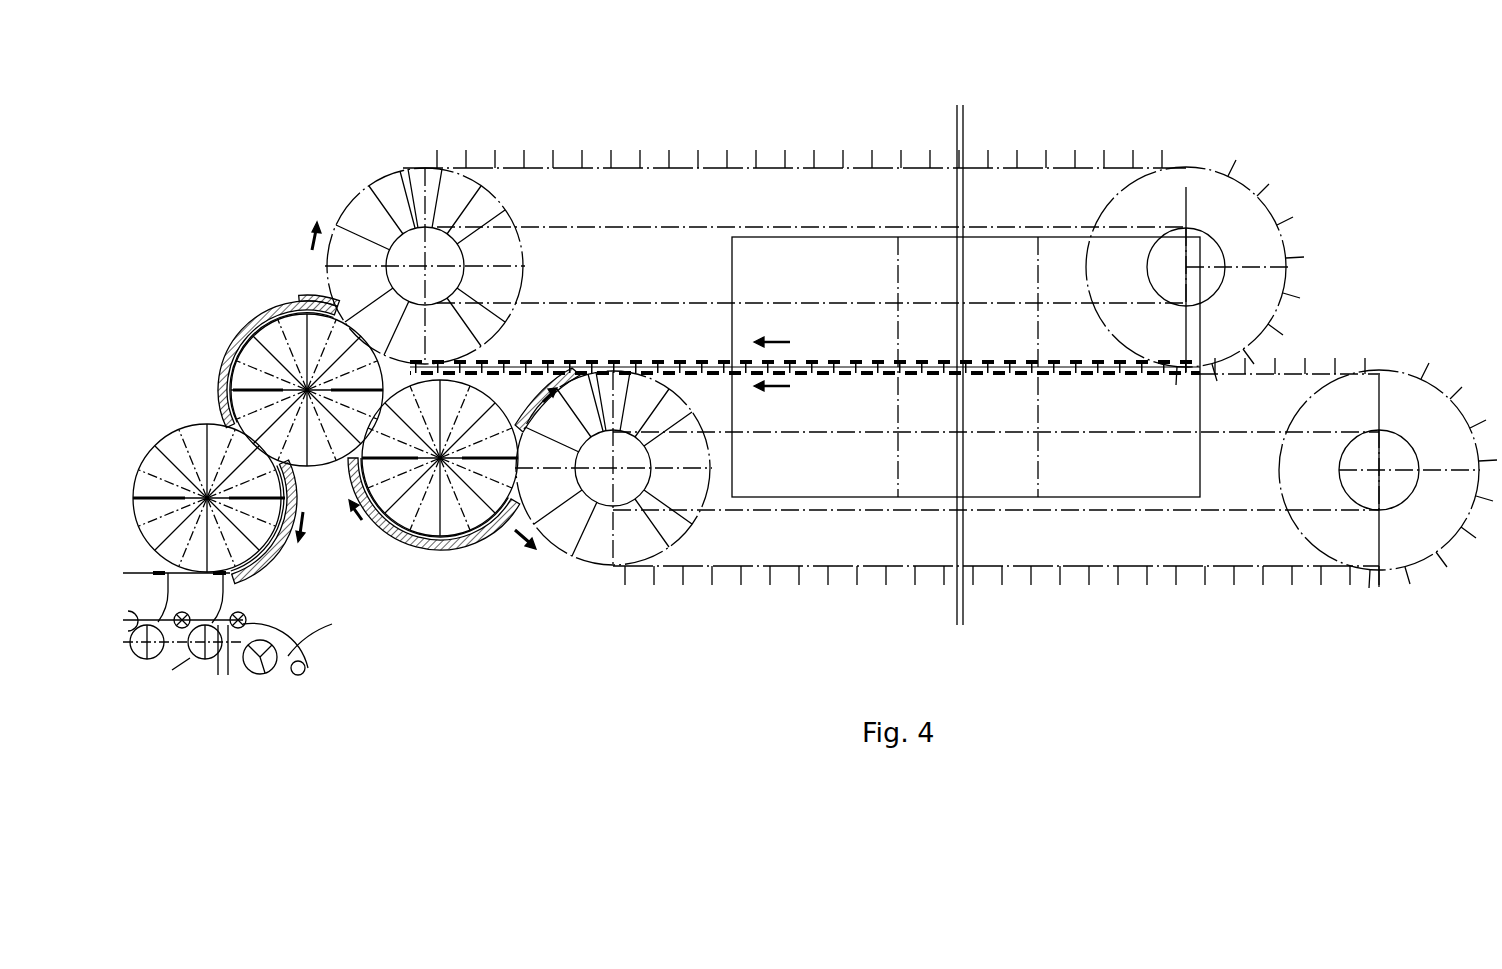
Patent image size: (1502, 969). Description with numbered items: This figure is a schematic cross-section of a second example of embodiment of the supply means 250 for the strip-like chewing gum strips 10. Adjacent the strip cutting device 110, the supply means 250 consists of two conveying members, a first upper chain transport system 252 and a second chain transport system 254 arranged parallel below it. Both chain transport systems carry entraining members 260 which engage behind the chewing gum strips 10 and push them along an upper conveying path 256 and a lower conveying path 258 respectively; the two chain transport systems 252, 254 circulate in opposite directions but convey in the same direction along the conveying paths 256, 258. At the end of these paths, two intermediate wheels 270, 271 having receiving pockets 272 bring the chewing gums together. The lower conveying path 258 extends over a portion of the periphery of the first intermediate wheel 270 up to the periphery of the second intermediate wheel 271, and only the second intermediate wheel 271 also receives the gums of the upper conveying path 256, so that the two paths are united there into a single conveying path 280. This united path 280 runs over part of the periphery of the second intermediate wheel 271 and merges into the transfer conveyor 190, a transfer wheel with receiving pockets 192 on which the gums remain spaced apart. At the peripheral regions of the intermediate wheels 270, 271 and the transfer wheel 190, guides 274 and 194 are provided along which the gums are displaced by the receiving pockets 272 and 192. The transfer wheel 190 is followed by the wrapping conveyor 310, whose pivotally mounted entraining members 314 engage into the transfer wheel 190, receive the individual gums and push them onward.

The chewing gum strips 10 is at (828, 360).
The strip cutting device 110 is at (830, 263).
The transfer conveyor 190 is at (182, 445).
The receiving pockets 192 is at (263, 563).
The guide 194 is at (280, 553).
The supply means 250 is at (1115, 141).
The first upper chain transport system 252 is at (622, 167).
The second chain transport system 254 is at (757, 575).
The upper conveying path 256 is at (527, 360).
The lower conveying path 258 is at (837, 377).
The entraining members 260 is at (553, 153).
The first intermediate wheel 270 is at (470, 550).
The second intermediate wheel 271 is at (250, 373).
The receiving pockets 272 is at (257, 323).
The guides 274 is at (220, 383).
The single conveying path 280 is at (243, 332).
The wrapping conveyor 310 is at (261, 706).
The entraining members 314 is at (325, 638).